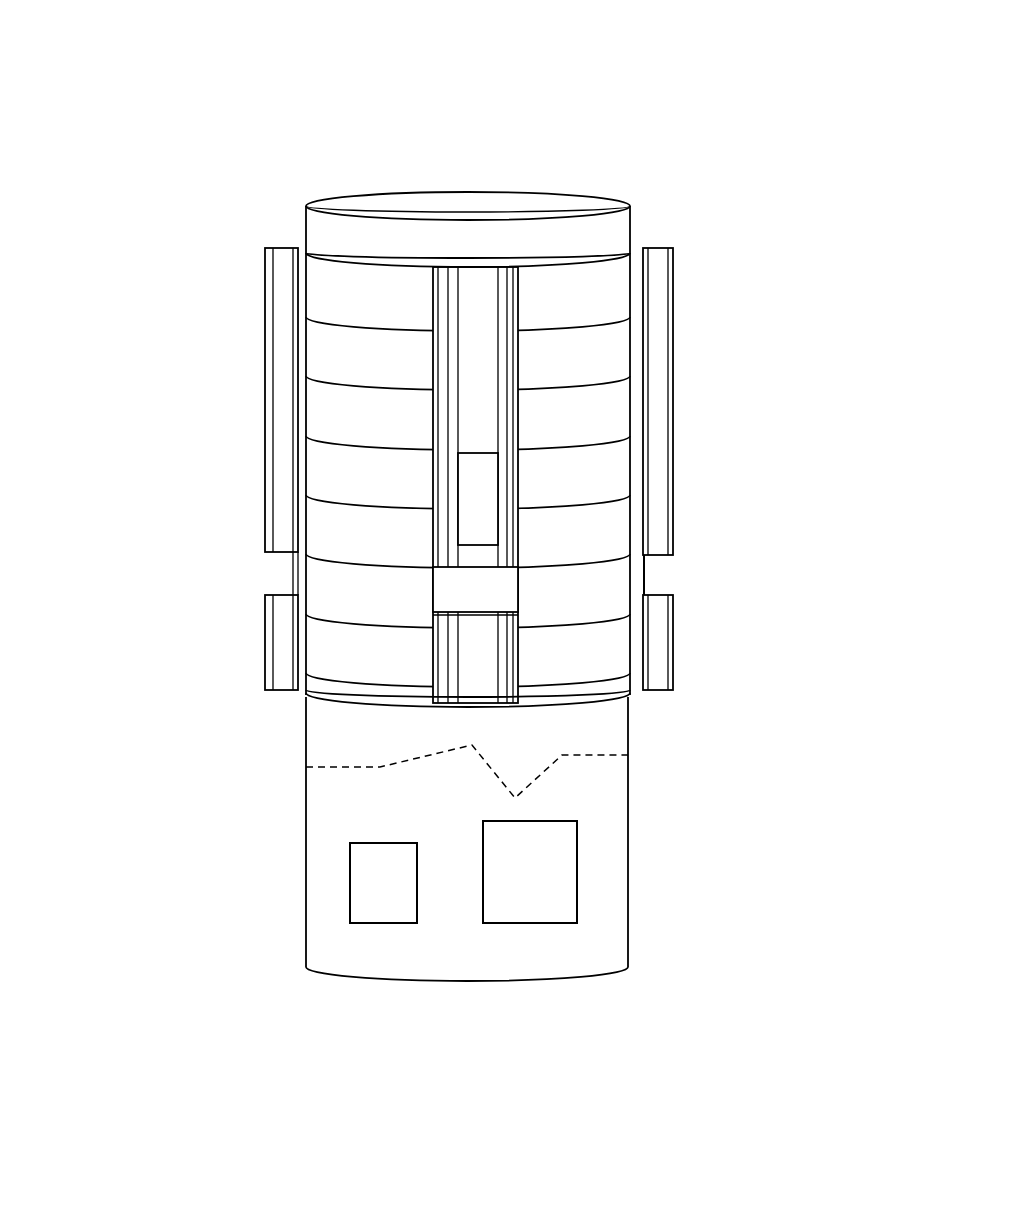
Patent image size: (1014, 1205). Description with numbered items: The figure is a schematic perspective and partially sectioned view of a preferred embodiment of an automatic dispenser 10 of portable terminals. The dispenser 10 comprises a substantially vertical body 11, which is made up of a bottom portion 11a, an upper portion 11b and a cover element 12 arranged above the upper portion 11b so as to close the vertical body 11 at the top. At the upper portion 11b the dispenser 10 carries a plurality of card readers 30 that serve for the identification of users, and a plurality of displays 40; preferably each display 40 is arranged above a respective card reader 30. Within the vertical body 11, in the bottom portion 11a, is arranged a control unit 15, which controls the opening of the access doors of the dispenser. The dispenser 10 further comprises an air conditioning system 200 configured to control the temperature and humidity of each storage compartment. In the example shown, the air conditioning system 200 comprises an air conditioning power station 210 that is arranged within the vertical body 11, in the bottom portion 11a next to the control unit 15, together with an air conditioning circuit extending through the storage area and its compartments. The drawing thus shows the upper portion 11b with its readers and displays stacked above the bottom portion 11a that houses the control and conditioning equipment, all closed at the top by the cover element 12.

The automatic dispenser 10 is at (237, 168).
The vertical body 11 is at (487, 600).
The bottom portion 11a is at (657, 832).
The upper portion 11b is at (692, 503).
The cover element 12 is at (643, 215).
The control unit 15 is at (377, 887).
The card reader 30 is at (270, 578).
The display 40 is at (473, 493).
The air conditioning system 200 is at (663, 930).
The air conditioning power station 210 is at (538, 878).